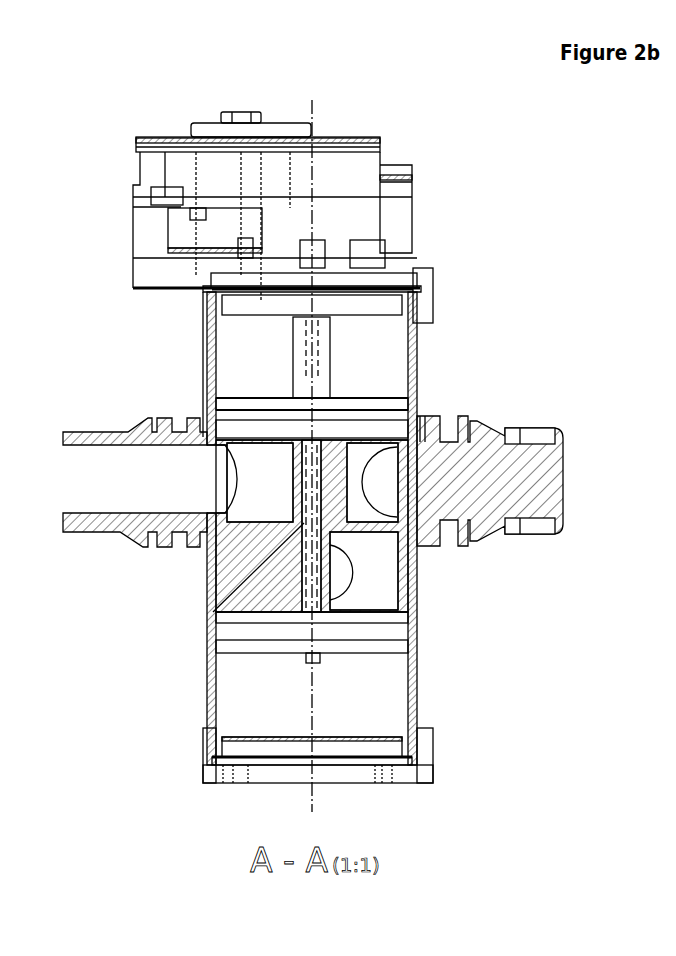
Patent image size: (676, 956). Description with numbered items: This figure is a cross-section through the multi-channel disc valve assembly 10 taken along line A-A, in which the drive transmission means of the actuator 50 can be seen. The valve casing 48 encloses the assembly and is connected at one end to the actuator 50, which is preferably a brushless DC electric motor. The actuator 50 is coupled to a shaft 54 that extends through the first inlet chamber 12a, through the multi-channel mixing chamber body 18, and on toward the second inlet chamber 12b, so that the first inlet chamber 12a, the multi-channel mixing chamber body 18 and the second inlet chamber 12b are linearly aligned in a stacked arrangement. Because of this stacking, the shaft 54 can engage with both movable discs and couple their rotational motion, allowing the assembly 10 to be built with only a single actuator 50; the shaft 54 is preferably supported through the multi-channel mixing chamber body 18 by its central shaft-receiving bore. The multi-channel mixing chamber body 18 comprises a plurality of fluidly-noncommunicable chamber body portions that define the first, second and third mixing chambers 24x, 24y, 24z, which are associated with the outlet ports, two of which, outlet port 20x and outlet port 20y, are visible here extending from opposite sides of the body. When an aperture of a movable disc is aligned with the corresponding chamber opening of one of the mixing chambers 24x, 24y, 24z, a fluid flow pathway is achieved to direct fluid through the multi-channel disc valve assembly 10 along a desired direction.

The multi-channel disc valve assembly 10 is at (123, 77).
The actuator 50 is at (348, 127).
The valve casing 48 is at (439, 224).
The first inlet chamber 12a is at (391, 357).
The shaft 54 is at (296, 350).
The outlet port 20y is at (110, 430).
The outlet port 20x is at (523, 424).
The second mixing chamber 24y is at (248, 468).
The first mixing chamber 24x is at (388, 469).
The third mixing chamber 24z is at (372, 572).
The multi-channel mixing chamber body 18 is at (229, 582).
The second inlet chamber 12b is at (260, 686).